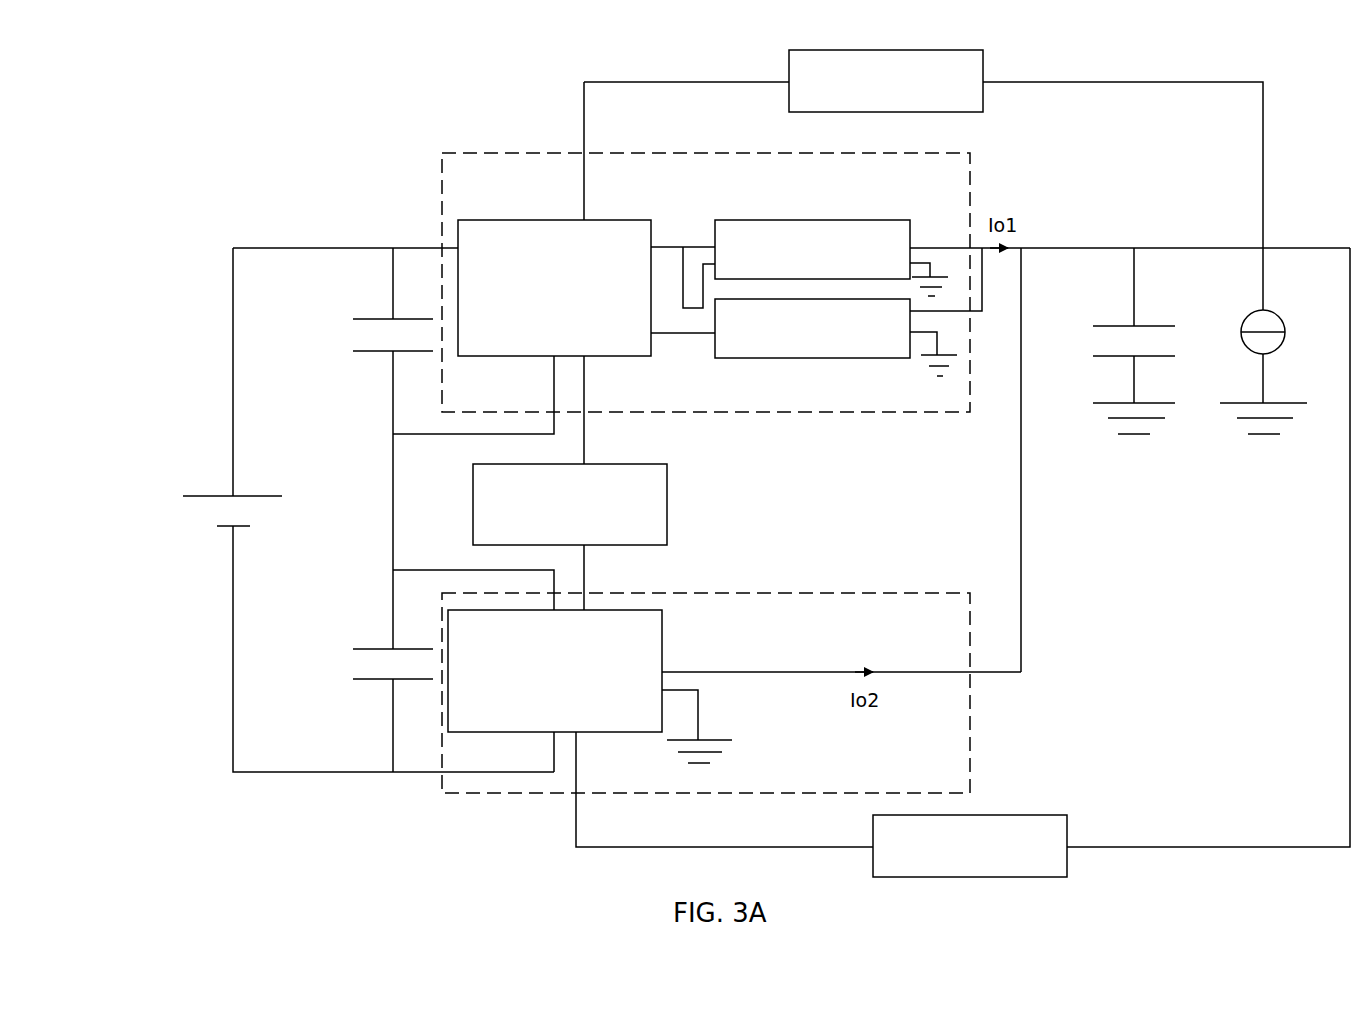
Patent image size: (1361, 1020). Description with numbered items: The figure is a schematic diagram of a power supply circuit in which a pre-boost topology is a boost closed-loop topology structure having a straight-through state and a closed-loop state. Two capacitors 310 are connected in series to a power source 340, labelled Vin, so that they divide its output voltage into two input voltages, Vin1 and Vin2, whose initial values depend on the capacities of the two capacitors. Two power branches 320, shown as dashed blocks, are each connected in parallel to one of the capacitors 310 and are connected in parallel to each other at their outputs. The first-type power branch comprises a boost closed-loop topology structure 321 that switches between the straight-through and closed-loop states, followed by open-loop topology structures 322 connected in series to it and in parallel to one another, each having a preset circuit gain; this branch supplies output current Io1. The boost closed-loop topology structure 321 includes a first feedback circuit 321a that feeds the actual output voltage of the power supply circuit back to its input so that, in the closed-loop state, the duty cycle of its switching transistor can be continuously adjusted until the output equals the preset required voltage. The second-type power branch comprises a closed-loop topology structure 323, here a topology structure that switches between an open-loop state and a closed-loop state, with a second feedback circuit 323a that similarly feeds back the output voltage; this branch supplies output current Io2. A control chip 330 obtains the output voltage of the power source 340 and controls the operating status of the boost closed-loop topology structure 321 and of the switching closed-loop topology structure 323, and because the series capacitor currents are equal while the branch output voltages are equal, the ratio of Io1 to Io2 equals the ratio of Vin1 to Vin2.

The capacitor 310 is at (369, 350).
The power branch 320 is at (735, 157).
The boost closed-loop topology structure 321 is at (623, 347).
The first feedback circuit 321a is at (963, 58).
The open-loop topology structure 322 is at (880, 217).
The closed-loop topology structure 323 is at (598, 733).
The second feedback circuit 323a is at (1067, 877).
The control chip 330 is at (670, 518).
The power source 340 is at (210, 495).